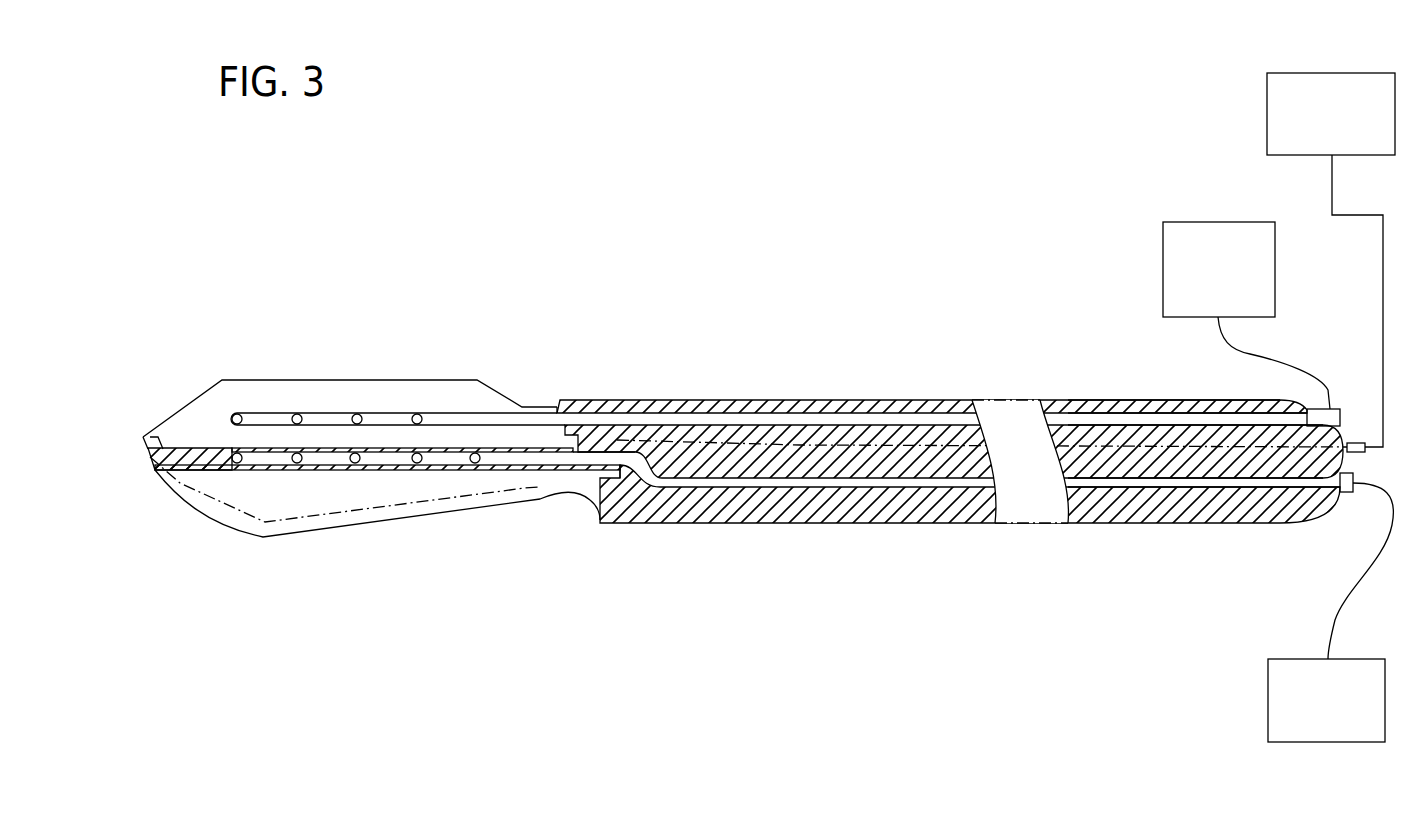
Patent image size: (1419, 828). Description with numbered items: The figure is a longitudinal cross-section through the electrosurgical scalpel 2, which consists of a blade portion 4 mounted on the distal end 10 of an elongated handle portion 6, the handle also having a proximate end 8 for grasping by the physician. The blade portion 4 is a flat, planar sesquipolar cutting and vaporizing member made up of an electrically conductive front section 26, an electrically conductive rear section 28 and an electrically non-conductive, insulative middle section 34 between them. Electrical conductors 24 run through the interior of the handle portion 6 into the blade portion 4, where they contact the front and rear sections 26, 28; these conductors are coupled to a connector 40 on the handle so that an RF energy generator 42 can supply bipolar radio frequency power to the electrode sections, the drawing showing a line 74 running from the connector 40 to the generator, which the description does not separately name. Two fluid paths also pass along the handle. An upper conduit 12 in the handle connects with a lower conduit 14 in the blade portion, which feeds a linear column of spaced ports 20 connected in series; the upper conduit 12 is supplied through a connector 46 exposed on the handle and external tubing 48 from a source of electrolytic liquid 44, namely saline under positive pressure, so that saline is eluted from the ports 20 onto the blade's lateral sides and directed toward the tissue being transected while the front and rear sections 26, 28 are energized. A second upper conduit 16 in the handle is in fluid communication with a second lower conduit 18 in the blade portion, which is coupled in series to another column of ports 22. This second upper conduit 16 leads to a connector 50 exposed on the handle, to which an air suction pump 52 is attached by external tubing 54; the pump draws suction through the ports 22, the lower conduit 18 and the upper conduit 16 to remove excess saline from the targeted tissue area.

The electrosurgical scalpel 2 is at (643, 184).
The blade portion 4 is at (342, 605).
The handle portion 6 is at (890, 525).
The proximate end 8 is at (1168, 400).
The distal end 10 is at (590, 402).
The upper conduit 12 is at (1093, 483).
The lower conduit 14 is at (580, 460).
The upper conduit 16 is at (1070, 415).
The lower conduit 18 is at (545, 413).
The ports 20 is at (473, 465).
The ports 22 is at (297, 413).
The electrical conductors 24 is at (773, 447).
The front section 26 is at (226, 530).
The rear section 28 is at (241, 380).
The middle section 34 is at (150, 455).
The connector 40 is at (1355, 420).
The RF energy generator 42 is at (1322, 73).
The source of electrolytic liquid 44 is at (1268, 710).
The connector 46 is at (1347, 500).
The external tubing 48 is at (1333, 614).
The connector 50 is at (1327, 408).
The air suction pump 52 is at (1185, 222).
The external tubing 54 is at (1305, 362).
The electrical wire 74 is at (1332, 193).